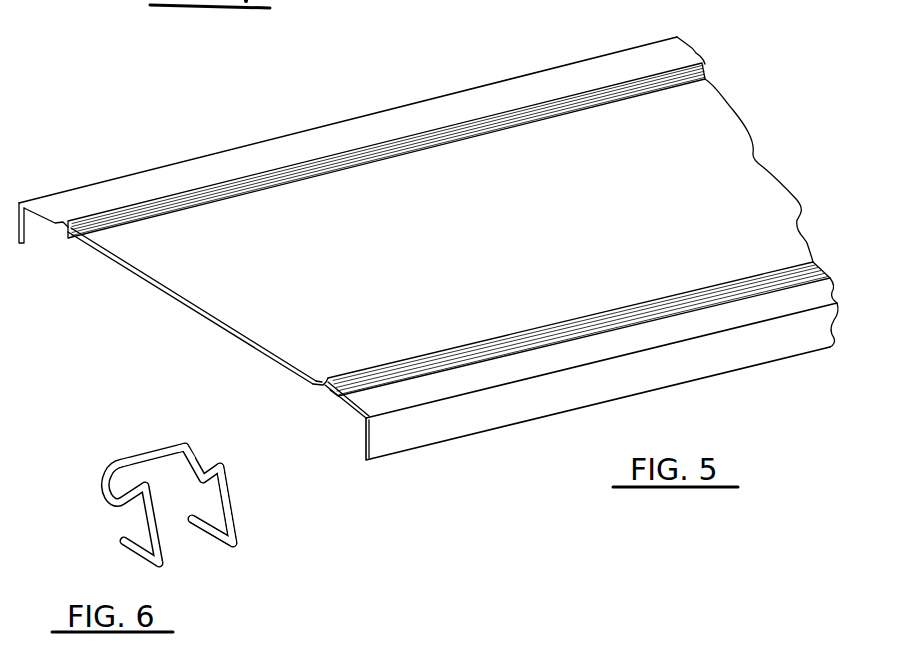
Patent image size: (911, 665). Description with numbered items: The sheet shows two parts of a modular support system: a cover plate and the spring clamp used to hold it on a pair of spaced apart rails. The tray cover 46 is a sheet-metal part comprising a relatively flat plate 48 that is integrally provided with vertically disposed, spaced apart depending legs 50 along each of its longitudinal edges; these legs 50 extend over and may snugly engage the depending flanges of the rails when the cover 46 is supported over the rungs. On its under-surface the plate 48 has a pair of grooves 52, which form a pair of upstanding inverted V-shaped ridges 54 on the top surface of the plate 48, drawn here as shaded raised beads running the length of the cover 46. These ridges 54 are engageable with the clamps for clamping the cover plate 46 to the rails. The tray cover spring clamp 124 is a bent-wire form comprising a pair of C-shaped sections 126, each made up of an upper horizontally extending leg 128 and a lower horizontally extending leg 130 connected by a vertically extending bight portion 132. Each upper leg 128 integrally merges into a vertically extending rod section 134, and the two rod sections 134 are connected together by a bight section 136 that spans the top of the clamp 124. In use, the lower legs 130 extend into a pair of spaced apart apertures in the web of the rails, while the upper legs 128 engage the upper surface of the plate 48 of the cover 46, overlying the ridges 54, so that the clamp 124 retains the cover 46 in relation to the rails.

In FIG. 5, the tray cover 46 is at (520, 62).
In FIG. 5, the flat plate 48 is at (750, 170).
In FIG. 5, the depending leg 50 is at (45, 233).
In FIG. 5, the groove 52 is at (322, 391).
In FIG. 5, the inverted V-shaped ridge 54 is at (315, 163).
In FIG. 6, the tray cover spring clamp 124 is at (118, 438).
In FIG. 6, the C-shaped section 126 is at (231, 494).
In FIG. 6, the upper leg 128 is at (123, 470).
In FIG. 6, the lower leg 130 is at (122, 544).
In FIG. 6, the bight portion 132 is at (148, 518).
In FIG. 6, the rod section 134 is at (107, 484).
In FIG. 6, the bight section 136 is at (153, 458).